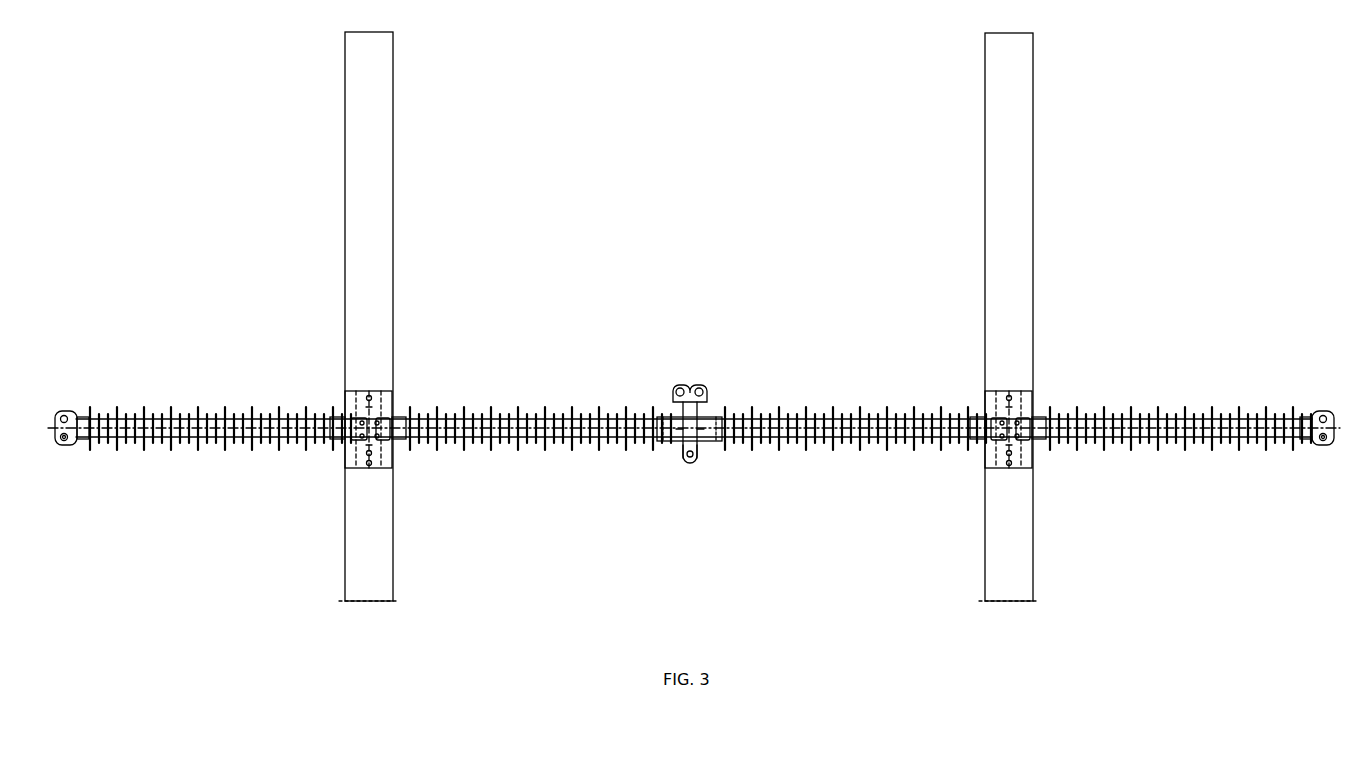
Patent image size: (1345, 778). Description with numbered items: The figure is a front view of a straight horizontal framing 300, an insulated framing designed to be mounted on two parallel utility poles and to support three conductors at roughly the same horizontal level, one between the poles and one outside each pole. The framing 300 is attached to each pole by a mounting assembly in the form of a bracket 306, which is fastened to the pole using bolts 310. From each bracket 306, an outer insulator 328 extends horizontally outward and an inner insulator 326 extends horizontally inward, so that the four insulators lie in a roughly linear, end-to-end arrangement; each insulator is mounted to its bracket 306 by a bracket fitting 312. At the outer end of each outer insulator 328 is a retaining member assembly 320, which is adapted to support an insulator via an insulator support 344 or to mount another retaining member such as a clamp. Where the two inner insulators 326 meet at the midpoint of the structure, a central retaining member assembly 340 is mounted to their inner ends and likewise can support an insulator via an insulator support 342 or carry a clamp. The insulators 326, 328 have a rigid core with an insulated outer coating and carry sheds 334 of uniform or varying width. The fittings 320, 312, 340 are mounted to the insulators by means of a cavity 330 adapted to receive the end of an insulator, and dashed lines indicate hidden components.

The straight horizontal framing 300 is at (1232, 64).
The bracket 306 is at (721, 316).
The bolt 310 is at (648, 433).
The bracket fitting 312 is at (658, 436).
The retaining member assembly 320 is at (694, 399).
The inner insulator 326 is at (855, 403).
The outer insulator 328 is at (1180, 455).
The cavity 330 is at (667, 441).
The shed 334 is at (1164, 402).
The central retaining member assembly 340 is at (721, 377).
The insulator support 342 is at (726, 463).
The insulator support 344 is at (694, 475).